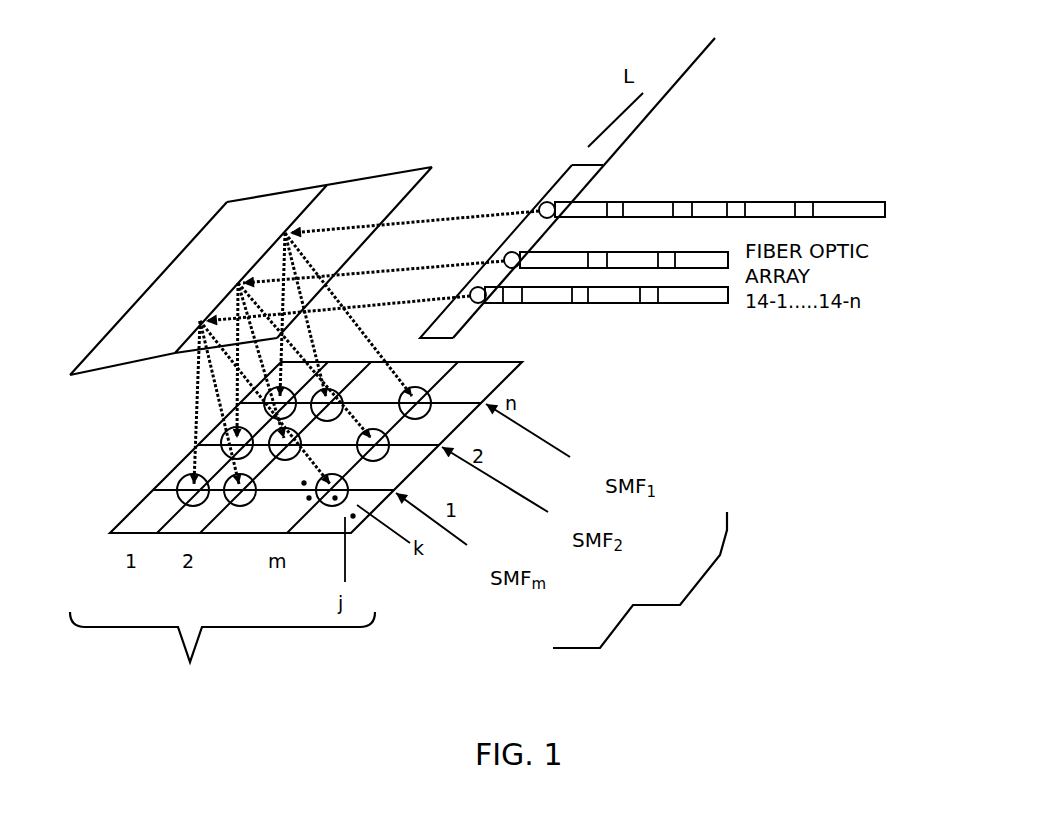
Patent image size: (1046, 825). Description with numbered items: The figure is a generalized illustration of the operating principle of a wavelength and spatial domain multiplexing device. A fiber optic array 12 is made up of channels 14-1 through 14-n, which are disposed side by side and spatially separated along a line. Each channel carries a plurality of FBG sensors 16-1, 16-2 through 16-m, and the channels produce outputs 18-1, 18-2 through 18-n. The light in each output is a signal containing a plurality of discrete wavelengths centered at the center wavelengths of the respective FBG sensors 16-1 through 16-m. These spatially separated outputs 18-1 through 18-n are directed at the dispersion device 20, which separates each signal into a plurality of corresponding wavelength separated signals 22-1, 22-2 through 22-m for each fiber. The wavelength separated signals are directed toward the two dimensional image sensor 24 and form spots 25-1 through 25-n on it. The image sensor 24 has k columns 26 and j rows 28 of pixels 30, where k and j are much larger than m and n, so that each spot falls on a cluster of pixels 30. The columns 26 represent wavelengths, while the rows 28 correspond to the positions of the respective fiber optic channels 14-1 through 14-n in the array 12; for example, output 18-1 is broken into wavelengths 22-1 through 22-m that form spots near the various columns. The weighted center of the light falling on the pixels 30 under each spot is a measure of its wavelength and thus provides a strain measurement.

The fiber optic array 12 is at (595, 176).
The fiber optic channel 14-1 is at (712, 141).
The fiber optic channel 14-n is at (607, 303).
The FBG sensor 16-1 is at (624, 202).
The FBG sensor 16-2 is at (693, 202).
The FBG sensor 16-m is at (813, 202).
The output 18-1 is at (504, 213).
The output 18-2 is at (385, 270).
The output 18-n is at (440, 317).
The dispersion device 20 is at (386, 175).
The wavelength separated signal 22-1 is at (207, 388).
The wavelength separated signal 22-2 is at (203, 425).
The wavelength separated signal 22-m is at (205, 483).
The 2D image sensor 24 is at (316, 484).
The spot 25-1 is at (333, 503).
The spot 25-n is at (433, 398).
The columns 26 is at (232, 702).
The rows 28 is at (717, 596).
The pixels 30 is at (351, 526).